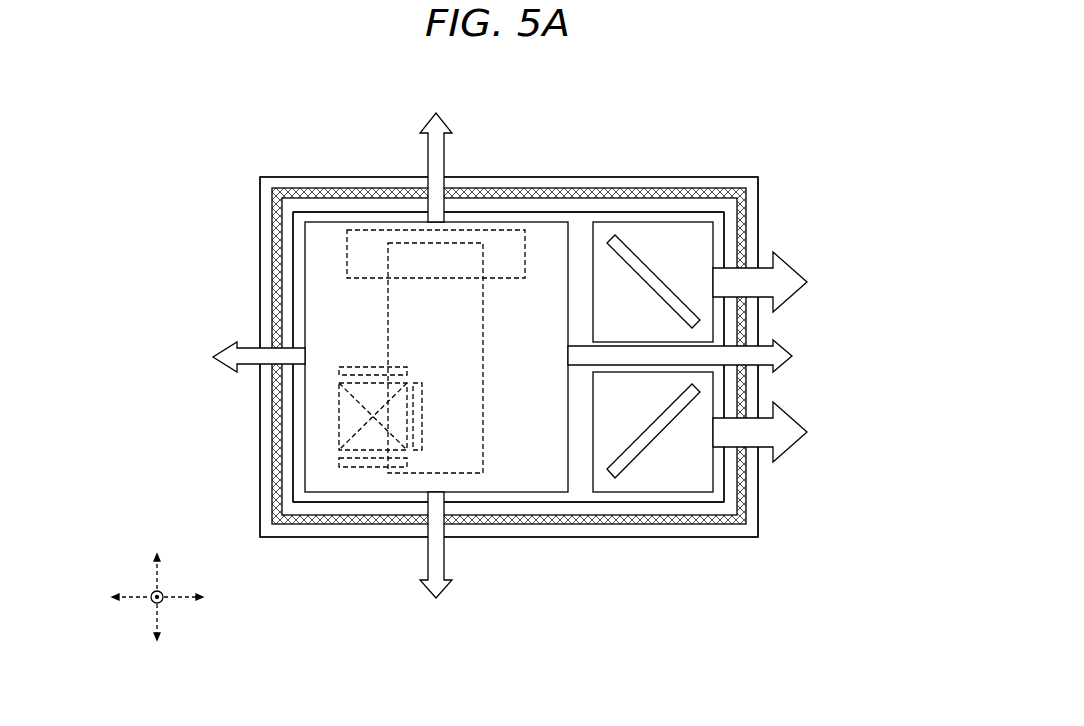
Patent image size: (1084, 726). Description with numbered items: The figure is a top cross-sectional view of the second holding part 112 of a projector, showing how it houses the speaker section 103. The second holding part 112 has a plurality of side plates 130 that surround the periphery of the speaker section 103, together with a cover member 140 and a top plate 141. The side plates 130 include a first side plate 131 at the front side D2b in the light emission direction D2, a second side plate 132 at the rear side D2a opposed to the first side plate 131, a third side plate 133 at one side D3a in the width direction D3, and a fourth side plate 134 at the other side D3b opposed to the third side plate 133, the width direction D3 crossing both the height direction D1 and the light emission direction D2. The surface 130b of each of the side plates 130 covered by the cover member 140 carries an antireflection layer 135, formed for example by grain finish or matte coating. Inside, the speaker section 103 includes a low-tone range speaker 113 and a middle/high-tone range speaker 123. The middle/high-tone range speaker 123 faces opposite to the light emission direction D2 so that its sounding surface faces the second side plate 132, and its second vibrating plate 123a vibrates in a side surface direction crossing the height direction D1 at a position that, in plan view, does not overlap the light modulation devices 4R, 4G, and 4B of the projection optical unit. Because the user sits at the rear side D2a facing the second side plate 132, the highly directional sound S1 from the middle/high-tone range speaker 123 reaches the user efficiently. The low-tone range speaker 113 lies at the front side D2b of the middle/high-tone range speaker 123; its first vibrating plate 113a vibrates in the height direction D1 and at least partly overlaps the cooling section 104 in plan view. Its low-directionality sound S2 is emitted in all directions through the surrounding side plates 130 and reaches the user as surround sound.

The speaker section 103 is at (657, 110).
The cooling section 104 is at (345, 245).
The second holding part 112 is at (742, 170).
The low-tone range speaker 113 is at (529, 219).
The first vibrating plate 113a is at (464, 474).
The middle/high-tone range speaker 123 is at (648, 360).
The second vibrating plate 123a is at (671, 290).
The side plates 130 is at (508, 357).
The surface of side plate 130b is at (744, 473).
The first side plate 131 is at (288, 297).
The second side plate 132 is at (730, 233).
The third side plate 133 is at (357, 202).
The fourth side plate 134 is at (563, 508).
The antireflection layer 135 is at (710, 524).
The cover member 140 is at (258, 432).
The top plate 141 is at (330, 266).
The light modulation device 4B is at (340, 374).
The light modulation device 4R is at (361, 468).
The light modulation device 4G is at (420, 458).
The sound in the middle/high-tone range S1 is at (790, 287).
The sound in the low-tone range S2 is at (440, 168).
The height direction D1 is at (163, 603).
The light emission direction D2 is at (142, 600).
The rear side in the light emission direction D2a is at (194, 597).
The front side in the light emission direction D2b is at (121, 597).
The width direction D3 is at (160, 581).
The one side in the width direction D3a is at (158, 556).
The other side in the width direction D3b is at (158, 638).